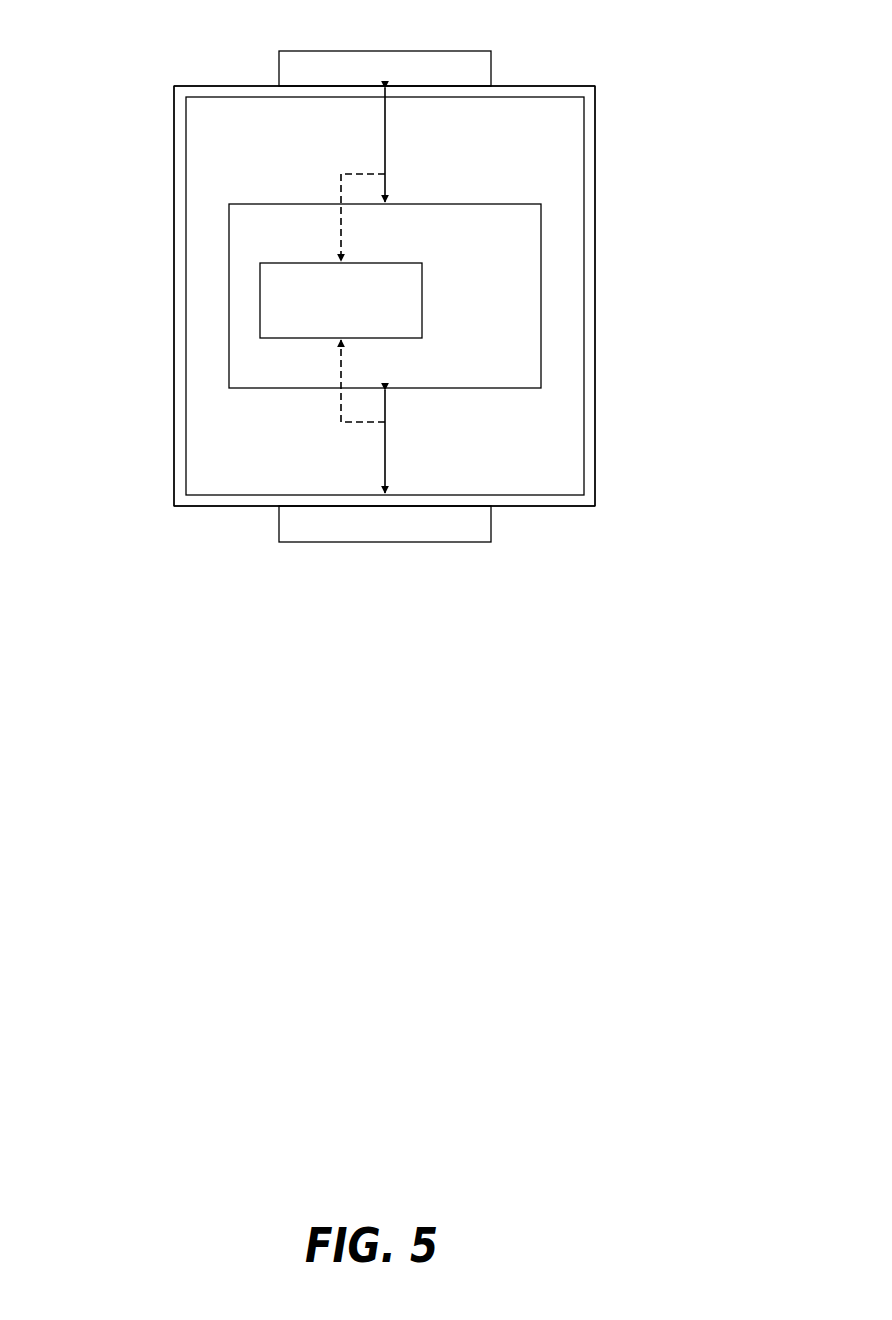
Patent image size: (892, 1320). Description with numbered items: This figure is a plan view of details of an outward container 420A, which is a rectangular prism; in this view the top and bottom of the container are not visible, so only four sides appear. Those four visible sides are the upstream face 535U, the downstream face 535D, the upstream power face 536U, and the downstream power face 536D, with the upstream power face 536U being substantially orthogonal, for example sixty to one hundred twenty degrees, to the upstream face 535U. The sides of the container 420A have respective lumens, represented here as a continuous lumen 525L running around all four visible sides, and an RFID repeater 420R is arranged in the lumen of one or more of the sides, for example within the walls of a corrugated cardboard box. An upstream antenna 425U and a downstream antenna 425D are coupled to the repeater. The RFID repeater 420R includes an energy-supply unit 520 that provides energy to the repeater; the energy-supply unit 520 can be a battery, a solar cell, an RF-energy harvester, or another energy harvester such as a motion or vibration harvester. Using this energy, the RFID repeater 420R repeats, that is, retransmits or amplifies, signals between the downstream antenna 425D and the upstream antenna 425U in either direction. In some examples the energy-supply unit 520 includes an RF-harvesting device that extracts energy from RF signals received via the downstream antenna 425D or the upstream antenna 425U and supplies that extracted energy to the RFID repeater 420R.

The outward container 420A is at (138, 296).
The continuous lumen 525L is at (174, 115).
The upstream face 535U is at (529, 86).
The downstream face 535D is at (540, 506).
The upstream power face 536U is at (174, 390).
The downstream power face 536D is at (595, 396).
The upstream antenna 425U is at (279, 70).
The downstream antenna 425D is at (279, 523).
The RFID repeater 420R is at (518, 204).
The energy-supply unit 520 is at (422, 298).